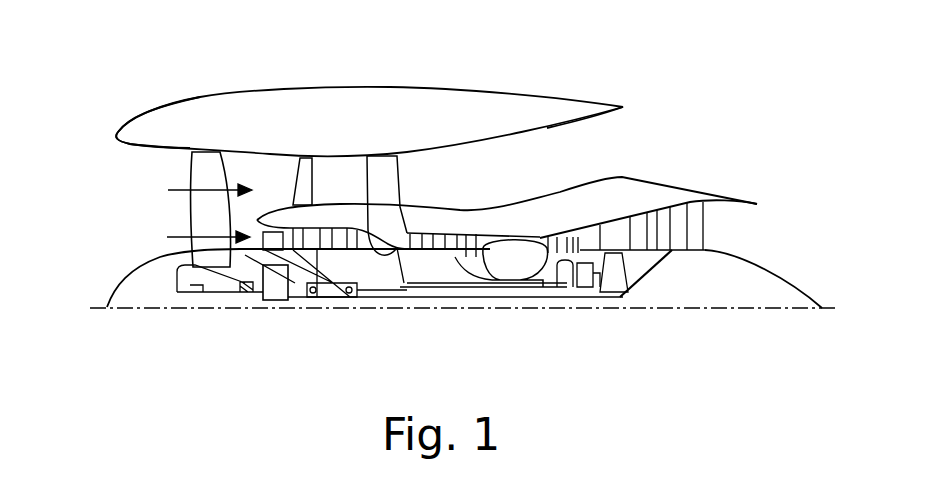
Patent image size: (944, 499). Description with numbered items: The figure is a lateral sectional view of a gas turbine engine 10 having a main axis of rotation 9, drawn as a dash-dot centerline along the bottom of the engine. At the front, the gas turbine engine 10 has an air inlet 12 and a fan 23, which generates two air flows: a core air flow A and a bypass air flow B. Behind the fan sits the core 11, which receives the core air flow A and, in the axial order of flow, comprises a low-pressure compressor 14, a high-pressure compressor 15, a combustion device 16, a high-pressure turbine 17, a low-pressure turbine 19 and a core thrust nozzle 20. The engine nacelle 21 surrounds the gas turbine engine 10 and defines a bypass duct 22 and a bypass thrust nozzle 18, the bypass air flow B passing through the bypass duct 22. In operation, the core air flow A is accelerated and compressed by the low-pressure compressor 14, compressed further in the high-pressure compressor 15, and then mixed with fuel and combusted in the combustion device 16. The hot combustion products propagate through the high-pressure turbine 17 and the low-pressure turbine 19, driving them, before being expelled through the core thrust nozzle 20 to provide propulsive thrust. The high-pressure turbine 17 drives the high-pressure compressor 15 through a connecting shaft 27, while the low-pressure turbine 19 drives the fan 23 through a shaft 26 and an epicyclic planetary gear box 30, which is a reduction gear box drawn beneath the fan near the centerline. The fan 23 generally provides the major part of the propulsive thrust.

The main axis of rotation 9 is at (727, 310).
The gas turbine engine 10 is at (170, 107).
The core 11 is at (527, 230).
The air inlet 12 is at (130, 165).
The low-pressure compressor 14 is at (330, 232).
The high-pressure compressor 15 is at (455, 245).
The combustion device 16 is at (513, 257).
The high-pressure turbine 17 is at (570, 235).
The bypass thrust nozzle 18 is at (708, 103).
The low-pressure turbine 19 is at (682, 238).
The core thrust nozzle 20 is at (757, 237).
The engine nacelle 21 is at (380, 100).
The bypass duct 22 is at (603, 144).
The fan 23 is at (197, 223).
The shaft 26 is at (425, 300).
The connecting shaft 27 is at (478, 292).
The epicyclic planetary gear box 30 is at (277, 293).